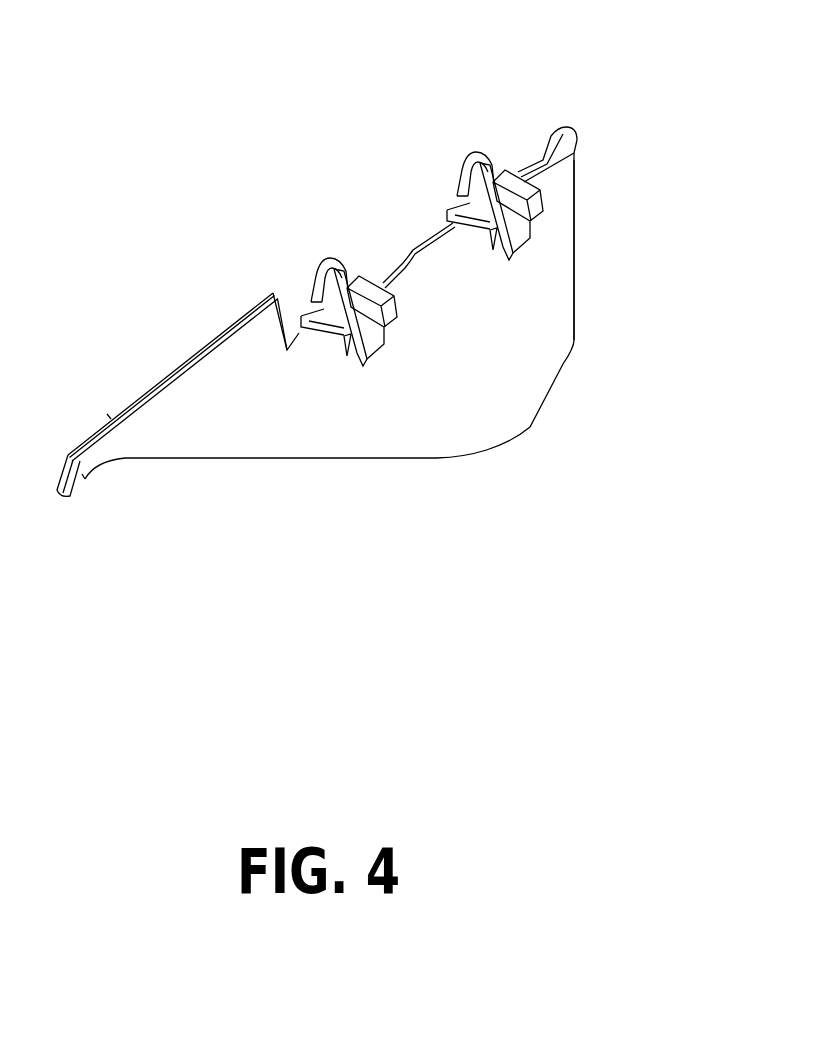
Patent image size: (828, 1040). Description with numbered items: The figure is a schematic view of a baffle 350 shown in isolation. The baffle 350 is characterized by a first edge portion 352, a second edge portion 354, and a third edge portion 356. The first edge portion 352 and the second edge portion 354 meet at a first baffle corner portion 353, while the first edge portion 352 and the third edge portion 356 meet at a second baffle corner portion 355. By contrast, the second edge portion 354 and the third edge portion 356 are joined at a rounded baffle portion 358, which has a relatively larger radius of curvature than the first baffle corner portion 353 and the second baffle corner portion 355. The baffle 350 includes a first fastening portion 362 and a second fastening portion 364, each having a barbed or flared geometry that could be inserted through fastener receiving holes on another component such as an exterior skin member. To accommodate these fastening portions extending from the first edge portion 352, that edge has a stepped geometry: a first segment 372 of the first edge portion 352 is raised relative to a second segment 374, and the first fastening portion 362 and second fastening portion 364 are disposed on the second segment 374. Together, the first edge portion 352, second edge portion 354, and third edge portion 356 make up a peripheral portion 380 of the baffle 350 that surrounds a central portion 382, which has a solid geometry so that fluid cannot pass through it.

The baffle 350 is at (373, 320).
The first edge portion 352 is at (158, 374).
The first baffle corner portion 353 is at (85, 479).
The second edge portion 354 is at (206, 459).
The second baffle corner portion 355 is at (575, 174).
The third edge portion 356 is at (575, 241).
The rounded baffle portion 358 is at (530, 427).
The first fastening portion 362 is at (331, 257).
The second fastening portion 364 is at (477, 152).
The first segment 372 is at (109, 412).
The second segment 374 is at (405, 258).
The peripheral portion 380 is at (322, 450).
The central portion 382 is at (434, 380).